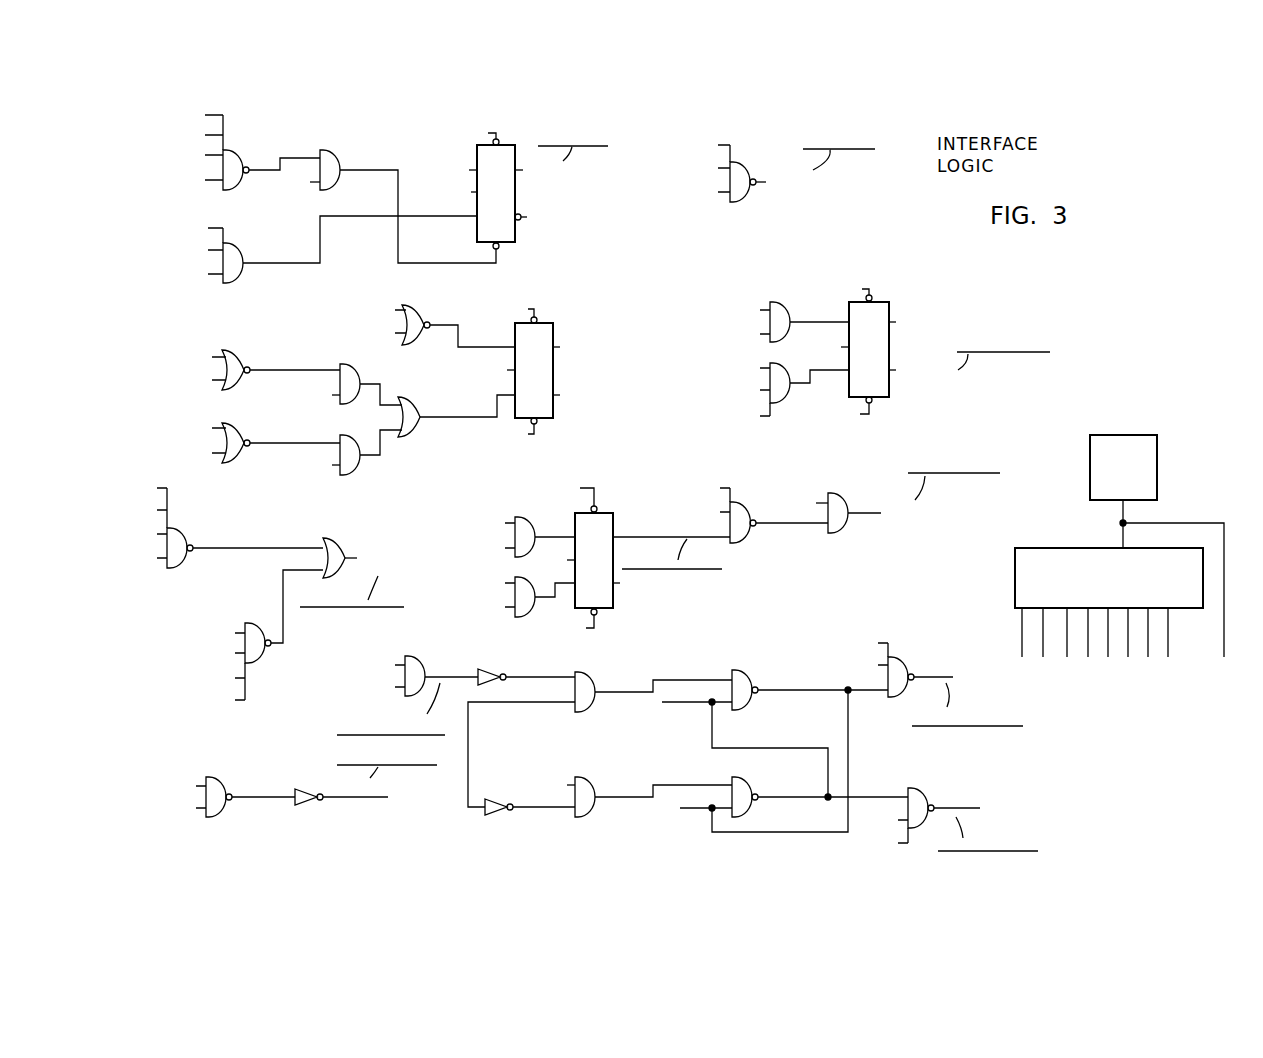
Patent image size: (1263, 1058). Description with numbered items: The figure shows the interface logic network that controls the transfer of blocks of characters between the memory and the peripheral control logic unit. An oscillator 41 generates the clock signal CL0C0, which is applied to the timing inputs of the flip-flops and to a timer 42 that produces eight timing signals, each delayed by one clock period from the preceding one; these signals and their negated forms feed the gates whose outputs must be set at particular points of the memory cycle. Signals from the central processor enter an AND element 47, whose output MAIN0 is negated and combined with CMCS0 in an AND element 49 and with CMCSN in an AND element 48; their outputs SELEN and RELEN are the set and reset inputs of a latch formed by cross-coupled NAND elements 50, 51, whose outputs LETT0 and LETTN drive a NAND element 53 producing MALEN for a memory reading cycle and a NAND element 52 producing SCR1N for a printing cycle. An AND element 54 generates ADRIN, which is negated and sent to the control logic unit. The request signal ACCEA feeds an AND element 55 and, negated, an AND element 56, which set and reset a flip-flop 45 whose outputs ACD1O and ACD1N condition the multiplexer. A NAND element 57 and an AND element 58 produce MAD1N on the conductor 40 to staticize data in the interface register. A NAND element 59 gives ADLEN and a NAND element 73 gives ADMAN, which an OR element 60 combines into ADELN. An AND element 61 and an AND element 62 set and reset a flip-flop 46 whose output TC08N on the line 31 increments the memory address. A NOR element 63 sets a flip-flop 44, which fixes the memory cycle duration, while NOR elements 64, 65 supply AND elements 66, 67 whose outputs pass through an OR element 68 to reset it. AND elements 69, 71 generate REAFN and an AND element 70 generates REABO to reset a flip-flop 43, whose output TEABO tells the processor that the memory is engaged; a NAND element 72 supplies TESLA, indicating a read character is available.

The line 31 is at (897, 376).
The conductor 40 is at (860, 507).
The oscillator 41 is at (1110, 435).
The timer 42 is at (1055, 548).
The flip-flop 43 is at (519, 242).
The flip-flop 44 is at (556, 406).
The flip-flop 45 is at (614, 608).
The flip-flop 46 is at (892, 393).
The AND element 47 is at (410, 662).
The AND element 48 is at (590, 817).
The AND element 49 is at (590, 712).
The NAND element 50 is at (740, 672).
The NAND element 51 is at (750, 810).
The NAND element 52 is at (917, 789).
The NAND element 53 is at (898, 659).
The AND element 54 is at (224, 808).
The AND element 55 is at (531, 526).
The AND element 56 is at (530, 617).
The NAND element 57 is at (740, 546).
The AND element 58 is at (843, 532).
The NAND element 59 is at (176, 538).
The OR element 60 is at (333, 545).
The AND element 61 is at (780, 307).
The AND element 62 is at (785, 409).
The NOR element 63 is at (409, 312).
The NOR element 64 is at (236, 356).
The NOR element 65 is at (236, 463).
The AND element 66 is at (356, 374).
The AND element 67 is at (360, 471).
The OR element 68 is at (407, 403).
The AND element 69 is at (236, 152).
The AND element 70 is at (243, 270).
The AND element 71 is at (336, 150).
The NAND element 72 is at (745, 168).
The NAND element 73 is at (262, 655).